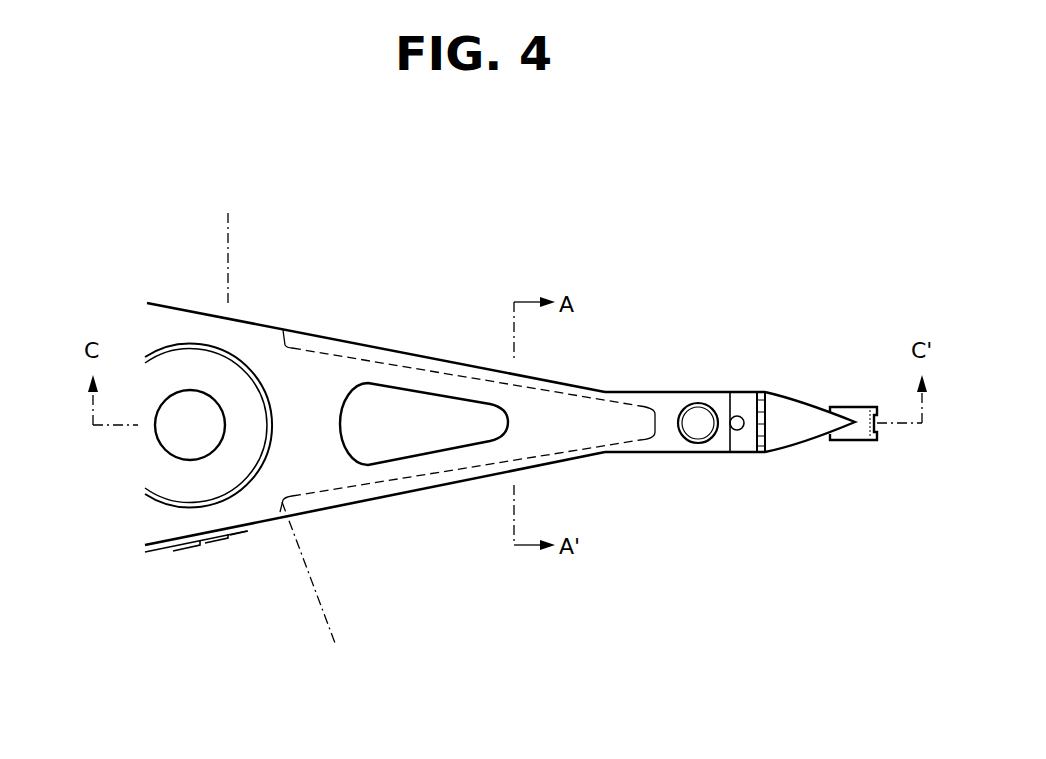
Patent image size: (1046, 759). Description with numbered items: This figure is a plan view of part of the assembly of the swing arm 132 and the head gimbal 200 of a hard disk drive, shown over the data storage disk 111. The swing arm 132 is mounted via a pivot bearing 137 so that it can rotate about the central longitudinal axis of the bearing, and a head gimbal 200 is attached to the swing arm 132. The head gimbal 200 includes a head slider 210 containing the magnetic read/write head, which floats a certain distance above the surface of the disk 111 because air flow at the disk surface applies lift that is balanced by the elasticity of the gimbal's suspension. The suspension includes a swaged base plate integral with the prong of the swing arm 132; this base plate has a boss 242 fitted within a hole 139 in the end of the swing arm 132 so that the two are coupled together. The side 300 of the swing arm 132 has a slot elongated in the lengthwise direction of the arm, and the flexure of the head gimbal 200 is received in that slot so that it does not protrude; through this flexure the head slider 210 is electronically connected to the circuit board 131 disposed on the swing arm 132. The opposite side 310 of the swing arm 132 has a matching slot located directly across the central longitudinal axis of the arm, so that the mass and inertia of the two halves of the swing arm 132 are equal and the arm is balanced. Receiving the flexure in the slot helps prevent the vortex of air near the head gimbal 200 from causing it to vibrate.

The data storage disk 111 is at (322, 587).
The circuit board 131 is at (200, 547).
The swing arm 132 is at (315, 380).
The pivot bearing 137 is at (185, 403).
The hole 139 is at (705, 425).
The head gimbal 200 is at (802, 456).
The head slider 210 is at (858, 407).
The boss 242 is at (690, 406).
The side of the swing arm 300 is at (415, 477).
The opposite side of the swing arm 310 is at (405, 372).